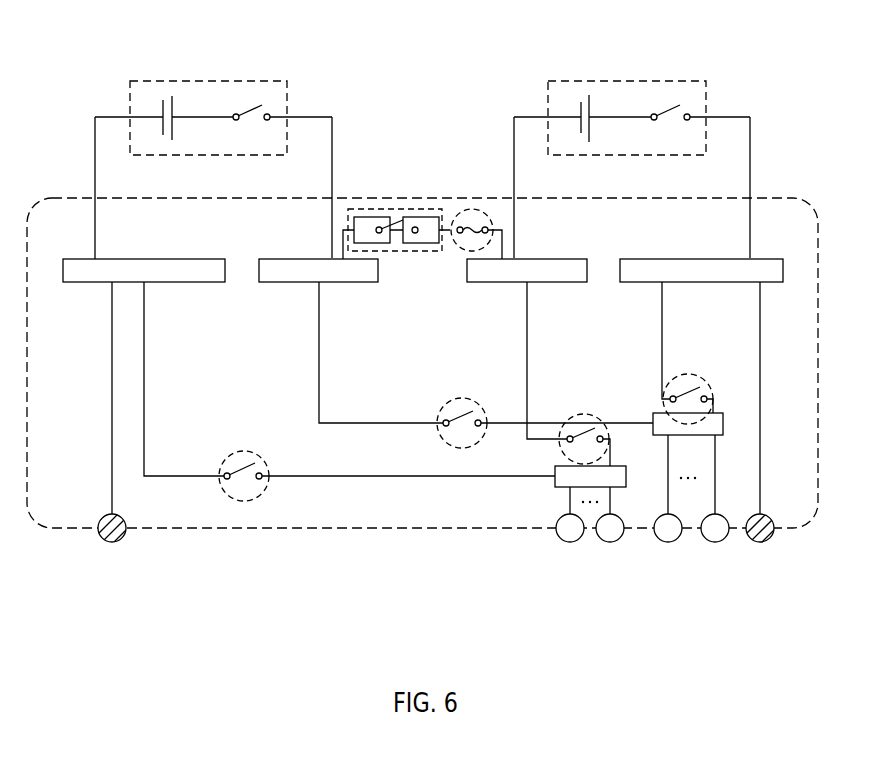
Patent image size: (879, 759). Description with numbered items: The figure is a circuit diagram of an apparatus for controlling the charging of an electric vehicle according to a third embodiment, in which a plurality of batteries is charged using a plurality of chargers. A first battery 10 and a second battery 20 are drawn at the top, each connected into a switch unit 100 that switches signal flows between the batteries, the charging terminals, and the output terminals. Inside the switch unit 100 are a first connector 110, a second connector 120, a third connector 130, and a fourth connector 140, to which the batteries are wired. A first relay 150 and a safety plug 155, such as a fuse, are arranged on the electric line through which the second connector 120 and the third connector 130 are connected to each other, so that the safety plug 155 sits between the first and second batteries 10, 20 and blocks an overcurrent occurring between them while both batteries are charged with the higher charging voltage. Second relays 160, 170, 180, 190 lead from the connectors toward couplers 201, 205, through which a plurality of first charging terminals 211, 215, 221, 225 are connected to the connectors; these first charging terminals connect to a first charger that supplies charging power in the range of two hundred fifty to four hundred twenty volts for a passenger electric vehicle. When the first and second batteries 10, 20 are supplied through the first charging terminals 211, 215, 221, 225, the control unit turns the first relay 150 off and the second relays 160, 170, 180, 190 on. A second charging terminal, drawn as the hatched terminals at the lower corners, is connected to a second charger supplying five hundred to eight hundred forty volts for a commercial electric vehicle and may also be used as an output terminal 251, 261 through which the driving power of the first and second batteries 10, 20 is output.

The first battery 10 is at (249, 81).
The second battery 20 is at (667, 81).
The switch unit 100 is at (797, 198).
The first connector 110 is at (193, 282).
The second connector 120 is at (350, 282).
The third connector 130 is at (490, 282).
The fourth connector 140 is at (633, 282).
The first relay 150 is at (395, 209).
The safety plug 155 is at (472, 209).
The second relay 160 is at (244, 451).
The second relay 170 is at (462, 398).
The second relay 180 is at (587, 414).
The second relay 190 is at (689, 374).
The coupler 201 is at (555, 487).
The coupler 205 is at (723, 424).
The first charging terminal 211 is at (570, 542).
The first charging terminal 215 is at (610, 542).
The first charging terminal 221 is at (668, 542).
The first charging terminal 225 is at (715, 542).
The output terminal 251 is at (112, 542).
The output terminal 261 is at (760, 542).